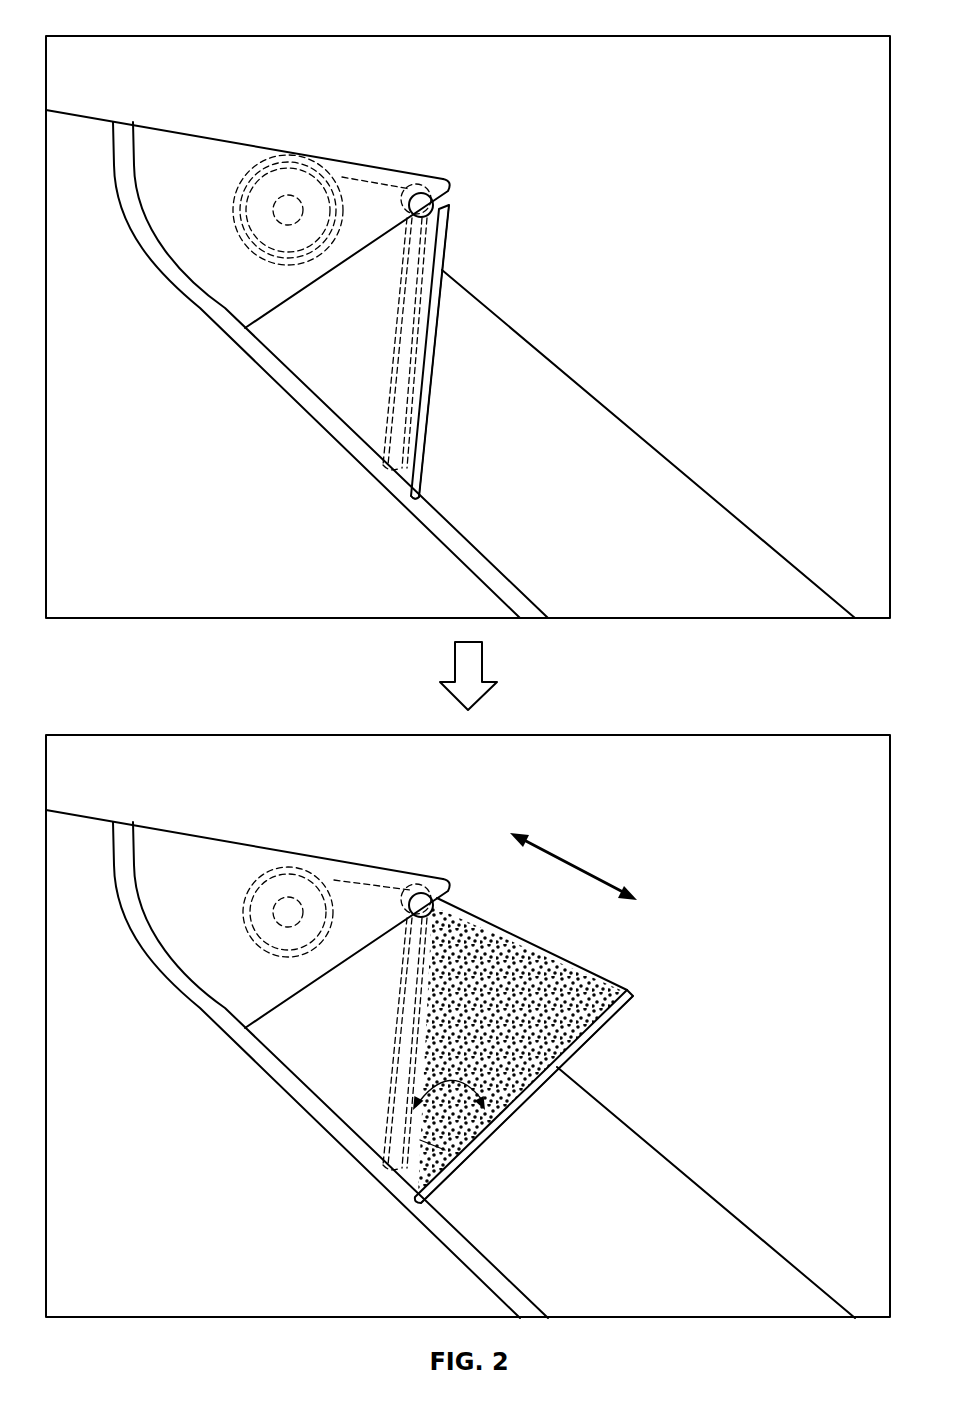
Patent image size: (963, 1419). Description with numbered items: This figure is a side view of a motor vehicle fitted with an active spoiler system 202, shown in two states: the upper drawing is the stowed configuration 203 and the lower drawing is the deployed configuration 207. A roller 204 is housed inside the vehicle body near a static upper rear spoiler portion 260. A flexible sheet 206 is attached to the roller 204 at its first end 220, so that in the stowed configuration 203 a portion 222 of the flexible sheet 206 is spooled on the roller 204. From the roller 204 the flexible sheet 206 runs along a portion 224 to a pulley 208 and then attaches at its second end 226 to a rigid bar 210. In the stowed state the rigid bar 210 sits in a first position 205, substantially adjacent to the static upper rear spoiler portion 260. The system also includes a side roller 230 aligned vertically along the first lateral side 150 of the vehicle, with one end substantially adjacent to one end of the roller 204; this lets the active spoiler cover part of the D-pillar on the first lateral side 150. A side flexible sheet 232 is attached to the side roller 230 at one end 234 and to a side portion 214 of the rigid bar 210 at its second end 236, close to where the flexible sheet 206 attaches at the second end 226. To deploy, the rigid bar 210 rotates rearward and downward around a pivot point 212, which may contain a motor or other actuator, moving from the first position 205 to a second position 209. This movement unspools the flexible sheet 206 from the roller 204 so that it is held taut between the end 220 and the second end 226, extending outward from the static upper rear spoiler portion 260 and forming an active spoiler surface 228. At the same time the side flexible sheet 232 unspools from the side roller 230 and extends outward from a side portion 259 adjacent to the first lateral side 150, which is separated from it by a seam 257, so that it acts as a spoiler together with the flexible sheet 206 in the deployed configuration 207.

The first lateral side 150 is at (136, 524).
The active spoiler system 202 is at (480, 148).
The stowed configuration 203 is at (690, 170).
The roller 204 is at (290, 200).
The first position 205 is at (450, 432).
The flexible sheet 206 is at (352, 140).
The deployed configuration 207 is at (690, 870).
The pulley 208 is at (430, 172).
The second position 209 is at (615, 1088).
The rigid bar 210 is at (447, 253).
The pivot point 212 is at (417, 503).
The side portion of rigid bar 214 is at (435, 362).
The first end of flexible sheet 220 is at (257, 173).
The spooled portion of flexible sheet 222 is at (270, 160).
The extending portion of flexible sheet 224 is at (395, 178).
The second end of flexible sheet 226 is at (447, 203).
The active spoiler surface 228 is at (533, 947).
The side roller 230 is at (383, 403).
The side flexible sheet 232 is at (400, 470).
The one end of side flexible sheet 234 is at (445, 1150).
The second end of side flexible sheet 236 is at (508, 1118).
The seam 257 is at (162, 275).
The side portion 259 is at (220, 316).
The static upper rear spoiler portion 260 is at (168, 204).